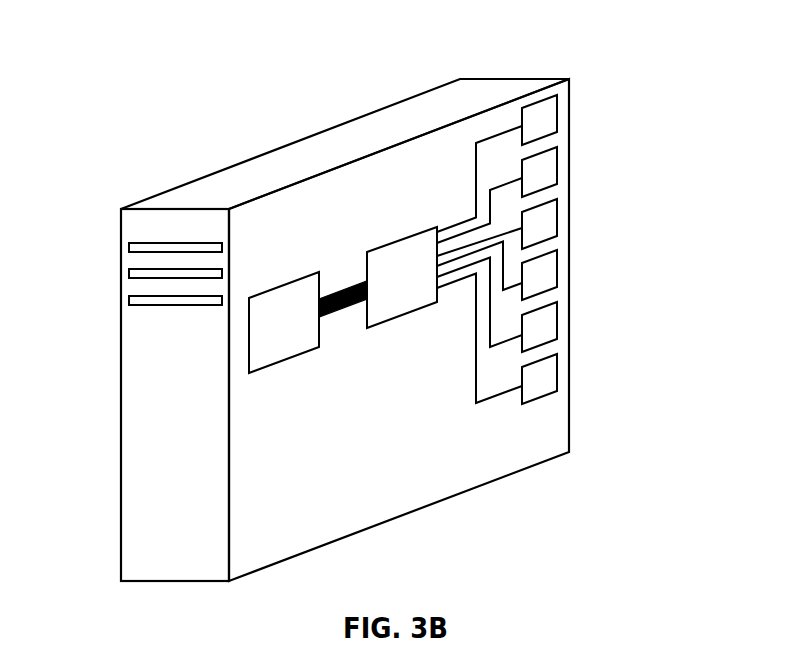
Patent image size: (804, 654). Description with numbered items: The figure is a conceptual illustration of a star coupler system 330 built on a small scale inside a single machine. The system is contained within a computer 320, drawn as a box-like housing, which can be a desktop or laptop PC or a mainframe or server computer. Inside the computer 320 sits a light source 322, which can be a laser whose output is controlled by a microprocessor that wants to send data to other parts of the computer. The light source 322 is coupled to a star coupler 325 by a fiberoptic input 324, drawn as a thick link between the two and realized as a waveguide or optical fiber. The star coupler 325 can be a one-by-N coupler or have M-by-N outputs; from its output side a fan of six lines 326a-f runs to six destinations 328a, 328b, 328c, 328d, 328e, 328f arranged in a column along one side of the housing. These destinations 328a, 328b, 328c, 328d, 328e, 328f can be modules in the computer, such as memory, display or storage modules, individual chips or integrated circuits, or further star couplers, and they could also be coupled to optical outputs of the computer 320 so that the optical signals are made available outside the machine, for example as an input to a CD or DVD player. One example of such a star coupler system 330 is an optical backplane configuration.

The computer 320 is at (142, 460).
The light source 322 is at (283, 347).
The fiberoptic input 324 is at (345, 292).
The star coupler 325 is at (402, 300).
The signal traces 326a-f is at (463, 168).
The destination 328a is at (543, 119).
The destination 328b is at (543, 171).
The destination 328c is at (543, 223).
The destination 328d is at (543, 274).
The destination 328e is at (543, 326).
The destination 328f is at (543, 378).
The star coupler system 330 is at (291, 106).